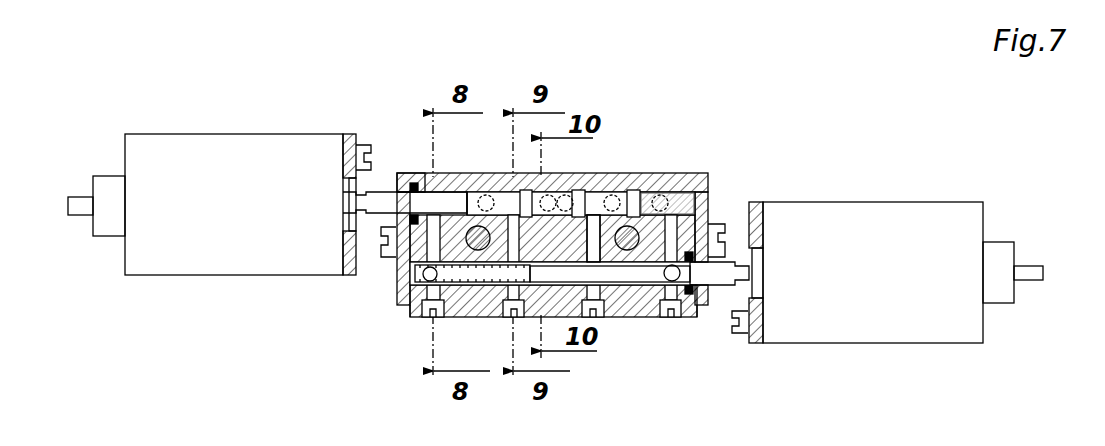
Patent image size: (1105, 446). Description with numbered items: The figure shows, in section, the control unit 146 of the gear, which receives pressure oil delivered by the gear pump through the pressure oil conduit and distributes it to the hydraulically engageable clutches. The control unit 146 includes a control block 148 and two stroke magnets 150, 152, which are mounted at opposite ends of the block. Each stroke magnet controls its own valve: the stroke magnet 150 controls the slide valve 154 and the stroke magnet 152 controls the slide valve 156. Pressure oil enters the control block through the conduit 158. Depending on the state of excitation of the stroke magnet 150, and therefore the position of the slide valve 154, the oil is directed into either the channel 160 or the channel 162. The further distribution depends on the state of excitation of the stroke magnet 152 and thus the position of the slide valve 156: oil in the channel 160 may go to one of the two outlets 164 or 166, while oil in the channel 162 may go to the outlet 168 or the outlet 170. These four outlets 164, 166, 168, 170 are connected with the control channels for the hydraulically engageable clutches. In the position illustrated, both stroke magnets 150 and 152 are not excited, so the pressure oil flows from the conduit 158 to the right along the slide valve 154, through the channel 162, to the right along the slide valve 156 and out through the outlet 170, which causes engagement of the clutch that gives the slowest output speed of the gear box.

The control unit 146 is at (700, 172).
The control block 148 is at (424, 173).
The stroke magnet 150 is at (849, 231).
The stroke magnet 152 is at (210, 165).
The slide valve 154 is at (721, 272).
The slide valve 156 is at (388, 205).
The conduit 158 is at (506, 316).
The channel 160 is at (515, 240).
The channel 162 is at (593, 248).
The outlet 164 is at (482, 175).
The outlet 166 is at (548, 178).
The outlet 168 is at (596, 173).
The outlet 170 is at (636, 173).